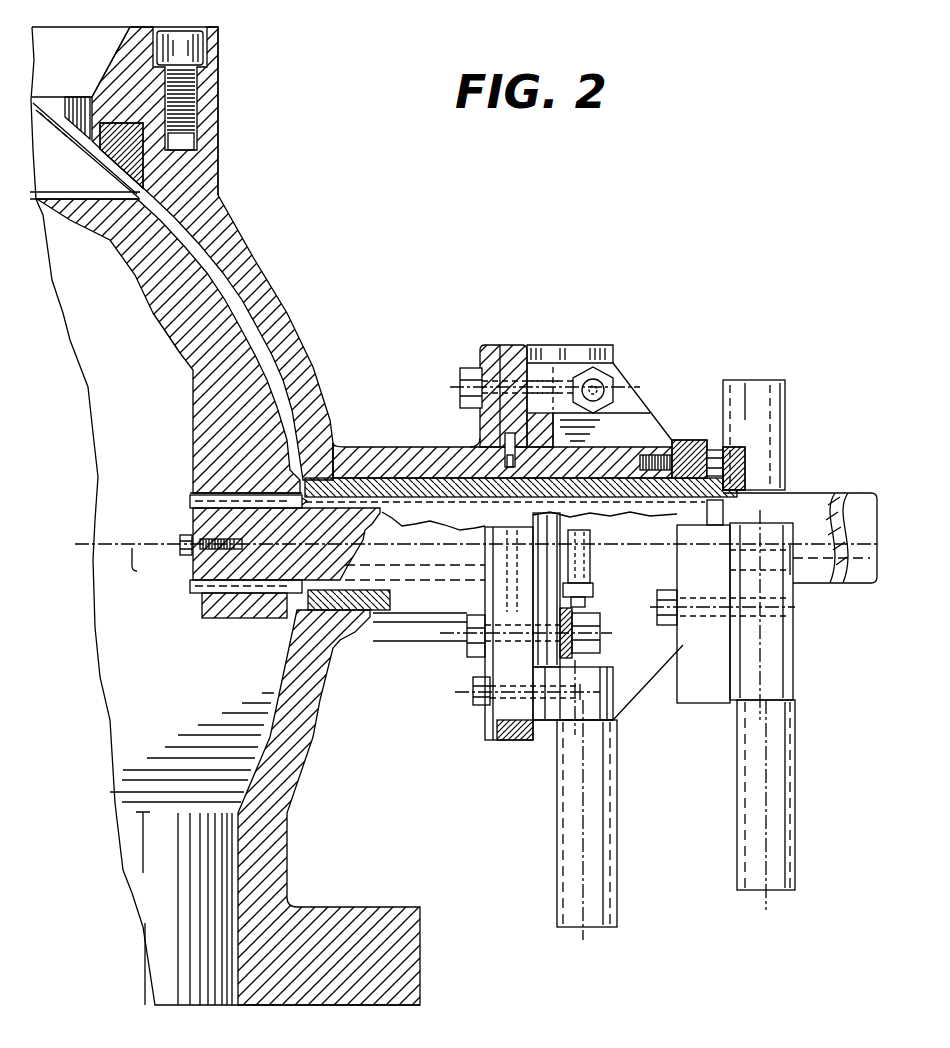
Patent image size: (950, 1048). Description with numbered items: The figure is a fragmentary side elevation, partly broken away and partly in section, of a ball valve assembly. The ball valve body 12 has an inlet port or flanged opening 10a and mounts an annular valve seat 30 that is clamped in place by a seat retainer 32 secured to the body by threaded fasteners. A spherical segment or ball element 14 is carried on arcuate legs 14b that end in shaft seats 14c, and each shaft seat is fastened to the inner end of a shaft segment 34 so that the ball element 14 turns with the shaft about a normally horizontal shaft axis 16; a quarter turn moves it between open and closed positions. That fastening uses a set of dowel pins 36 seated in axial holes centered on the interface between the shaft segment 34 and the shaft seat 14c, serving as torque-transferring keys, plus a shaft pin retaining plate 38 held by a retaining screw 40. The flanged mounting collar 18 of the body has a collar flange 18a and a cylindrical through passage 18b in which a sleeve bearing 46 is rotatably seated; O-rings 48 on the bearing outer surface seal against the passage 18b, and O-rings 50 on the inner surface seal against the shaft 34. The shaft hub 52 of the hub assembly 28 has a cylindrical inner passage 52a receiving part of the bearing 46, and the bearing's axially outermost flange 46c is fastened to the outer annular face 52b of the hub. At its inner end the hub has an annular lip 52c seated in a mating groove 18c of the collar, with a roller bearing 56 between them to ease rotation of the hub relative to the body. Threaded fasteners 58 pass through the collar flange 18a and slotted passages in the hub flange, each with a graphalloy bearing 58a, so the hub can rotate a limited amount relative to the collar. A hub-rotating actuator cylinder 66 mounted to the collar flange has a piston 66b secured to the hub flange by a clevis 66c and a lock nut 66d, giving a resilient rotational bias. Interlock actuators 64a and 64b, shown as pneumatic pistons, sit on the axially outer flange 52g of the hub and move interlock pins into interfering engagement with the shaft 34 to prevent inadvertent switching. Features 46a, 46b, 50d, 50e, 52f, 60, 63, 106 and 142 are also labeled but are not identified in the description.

The inlet port 10a is at (245, 1009).
The ball valve body 12 is at (240, 225).
The ball element 14 is at (133, 277).
The arcuate legs 14b is at (172, 307).
The shaft seats 14c is at (202, 488).
The shaft axis 16 is at (477, 563).
The flanged mounting collar 18 is at (401, 645).
The collar flange 18a is at (490, 345).
The cylindrical through passage 18b is at (352, 478).
The mating groove 18c is at (477, 438).
The hub assembly 28 is at (623, 378).
The valve seat 30 is at (108, 173).
The seat retainer 32 is at (157, 28).
The shaft segment 34 is at (417, 534).
The dowel pins 36 is at (202, 612).
The shaft pin retaining plate 38 is at (190, 501).
The retaining screw 40 is at (182, 543).
The sleeve bearing 46 is at (334, 446).
The threaded portion 46a is at (633, 477).
The flange 46b is at (393, 477).
The bearing flange 46c is at (721, 440).
The O-ring 48 is at (510, 477).
The O-ring 50 is at (667, 497).
The bolt 50d is at (473, 694).
The plate end 50e is at (497, 729).
The shaft hub 52 is at (625, 381).
The cylindrical inner passage 52a is at (605, 443).
The outer annular face 52b is at (693, 438).
The annular lip 52c is at (500, 497).
The bracket arm 52f is at (646, 660).
The axially outer flange 52g is at (680, 643).
The roller bearing 56 is at (507, 344).
The threaded fasteners 58 is at (460, 368).
The graphalloy bearing 58a is at (560, 600).
The clamp block 60 is at (543, 344).
The sleeve 63 is at (773, 644).
The interlock actuator 64a is at (777, 775).
The interlock actuator 64b is at (773, 457).
The hub-rotating actuator cylinder 66 is at (600, 790).
The piston 66b is at (587, 601).
The clevis 66c is at (592, 546).
The lock nut 66d is at (595, 585).
The frame 106 is at (83, 45).
The surface 142 is at (63, 134).